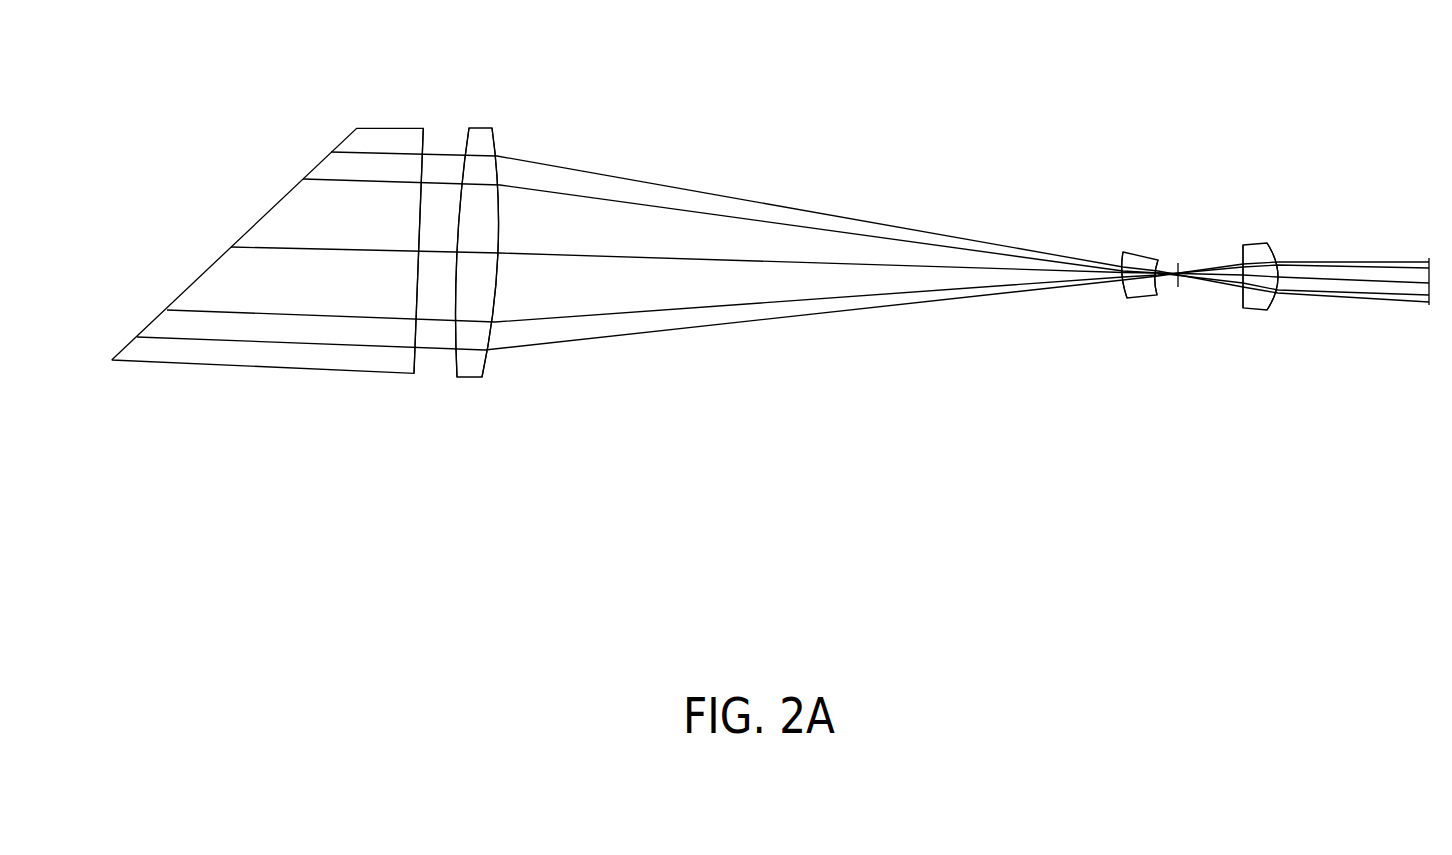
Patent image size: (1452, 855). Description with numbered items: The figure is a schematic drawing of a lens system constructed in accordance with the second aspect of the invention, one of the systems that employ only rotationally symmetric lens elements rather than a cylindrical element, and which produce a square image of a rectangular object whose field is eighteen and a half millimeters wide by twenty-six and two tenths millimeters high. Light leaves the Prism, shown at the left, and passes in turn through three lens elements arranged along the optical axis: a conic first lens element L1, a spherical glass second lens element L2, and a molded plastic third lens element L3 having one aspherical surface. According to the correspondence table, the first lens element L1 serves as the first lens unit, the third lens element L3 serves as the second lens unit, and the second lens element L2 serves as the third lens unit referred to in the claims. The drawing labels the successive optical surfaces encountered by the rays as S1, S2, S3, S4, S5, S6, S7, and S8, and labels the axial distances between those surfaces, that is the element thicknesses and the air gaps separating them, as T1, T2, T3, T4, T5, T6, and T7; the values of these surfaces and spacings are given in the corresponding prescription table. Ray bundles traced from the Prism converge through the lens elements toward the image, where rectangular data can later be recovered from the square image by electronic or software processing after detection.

The prism Prism is at (268, 250).
The first lens element L1 is at (477, 252).
The second lens element L2 is at (1137, 258).
The third lens element L3 is at (1257, 257).
The prism exit surface S1 is at (413, 357).
The first lens front surface S2 is at (453, 355).
The first lens rear surface S3 is at (483, 368).
The second lens front surface S4 is at (1118, 287).
The aperture stop surface S5 is at (1178, 287).
The second lens rear surface S6 is at (1158, 296).
The third lens front surface S7 is at (1237, 298).
The third lens rear surface S8 is at (1267, 310).
The air gap between prism and first lens T1 is at (440, 252).
The first lens thickness T2 is at (500, 253).
The air gap between first and second lens T3 is at (802, 263).
The second lens thickness T4 is at (1143, 288).
The air gap between second lens and stop T5 is at (1178, 263).
The air gap between stop and third lens T6 is at (1205, 272).
The third lens thickness T7 is at (1257, 283).